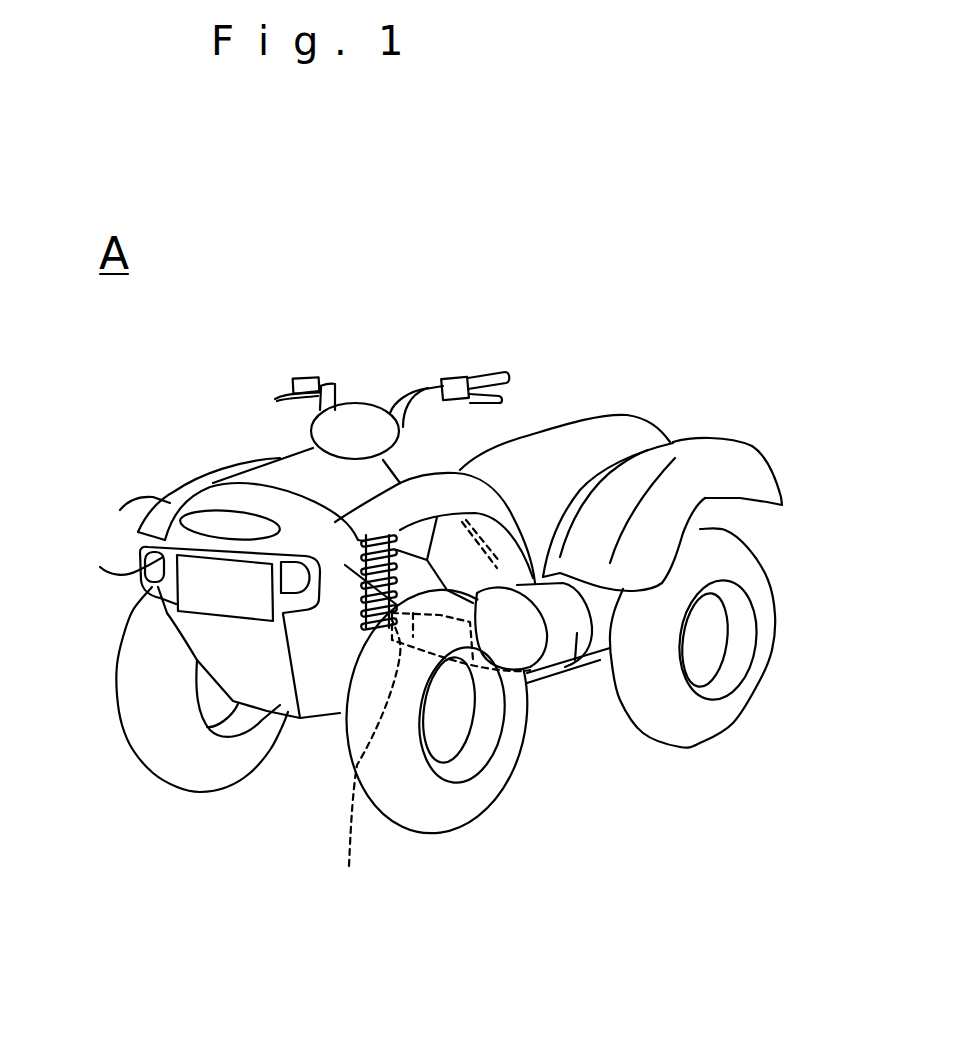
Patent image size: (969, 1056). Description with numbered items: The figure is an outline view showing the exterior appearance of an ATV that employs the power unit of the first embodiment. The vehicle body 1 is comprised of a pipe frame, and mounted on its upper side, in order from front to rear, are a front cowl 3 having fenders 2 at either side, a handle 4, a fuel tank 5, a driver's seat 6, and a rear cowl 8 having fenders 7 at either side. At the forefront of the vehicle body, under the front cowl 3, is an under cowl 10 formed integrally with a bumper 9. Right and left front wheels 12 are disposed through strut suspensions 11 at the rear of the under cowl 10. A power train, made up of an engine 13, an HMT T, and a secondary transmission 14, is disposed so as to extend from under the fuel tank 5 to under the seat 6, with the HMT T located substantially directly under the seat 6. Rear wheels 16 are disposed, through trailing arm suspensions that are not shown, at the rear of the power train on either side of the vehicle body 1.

The vehicle body 1 is at (568, 666).
The fenders 2 is at (120, 510).
The front cowl 3 is at (246, 466).
The handle 4 is at (323, 382).
The fuel tank 5 is at (423, 460).
The driver's seat 6 is at (520, 452).
The fenders 7 is at (563, 422).
The rear cowl 8 is at (677, 443).
The bumper 9 is at (138, 562).
The under cowl 10 is at (233, 652).
The strut suspensions 11 is at (328, 640).
The front wheels 12 is at (190, 780).
The engine 13 is at (527, 637).
The secondary transmission 14 is at (585, 686).
The rear wheels 16 is at (777, 603).
The HMT T is at (433, 716).